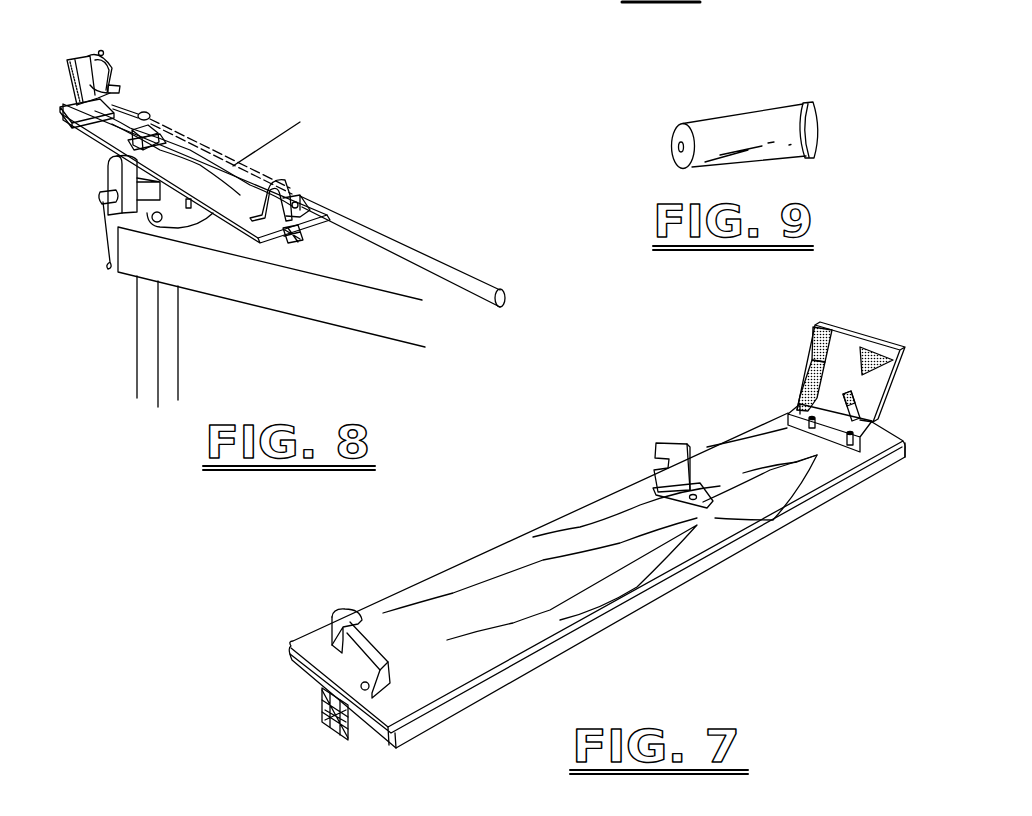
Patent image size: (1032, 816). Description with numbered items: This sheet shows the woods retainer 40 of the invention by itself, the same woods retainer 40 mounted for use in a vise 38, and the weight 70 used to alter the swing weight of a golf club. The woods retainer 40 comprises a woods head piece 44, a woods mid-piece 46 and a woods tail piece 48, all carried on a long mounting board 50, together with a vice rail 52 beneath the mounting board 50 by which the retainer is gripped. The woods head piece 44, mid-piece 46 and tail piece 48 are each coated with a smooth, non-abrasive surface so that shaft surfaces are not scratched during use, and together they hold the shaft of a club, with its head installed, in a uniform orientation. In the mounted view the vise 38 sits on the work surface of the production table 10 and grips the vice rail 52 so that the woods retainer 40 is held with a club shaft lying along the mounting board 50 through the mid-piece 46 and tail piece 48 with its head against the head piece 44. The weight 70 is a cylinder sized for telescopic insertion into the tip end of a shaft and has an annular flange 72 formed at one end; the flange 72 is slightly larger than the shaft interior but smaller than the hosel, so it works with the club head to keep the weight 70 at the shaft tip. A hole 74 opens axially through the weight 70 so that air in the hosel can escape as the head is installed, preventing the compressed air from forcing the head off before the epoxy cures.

In FIG. 8, the production table 10 is at (258, 300).
In FIG. 8, the vise 38 is at (113, 179).
In FIG. 8, the woods retainer 40 is at (265, 176).
In FIG. 7, the woods retainer 40 is at (587, 535).
In FIG. 8, the woods head piece 44 is at (68, 80).
In FIG. 7, the woods head piece 44 is at (856, 386).
In FIG. 8, the woods mid-piece 46 is at (150, 115).
In FIG. 7, the woods mid-piece 46 is at (690, 465).
In FIG. 8, the woods tail piece 48 is at (290, 183).
In FIG. 7, the woods tail piece 48 is at (332, 614).
In FIG. 8, the mounting board 50 is at (232, 178).
In FIG. 7, the mounting board 50 is at (589, 587).
In FIG. 8, the vice rail 52 is at (298, 238).
In FIG. 7, the vice rail 52 is at (322, 712).
In FIG. 9, the weight 70 is at (747, 126).
In FIG. 9, the annular flange 72 is at (823, 135).
In FIG. 9, the hole 74 is at (669, 145).